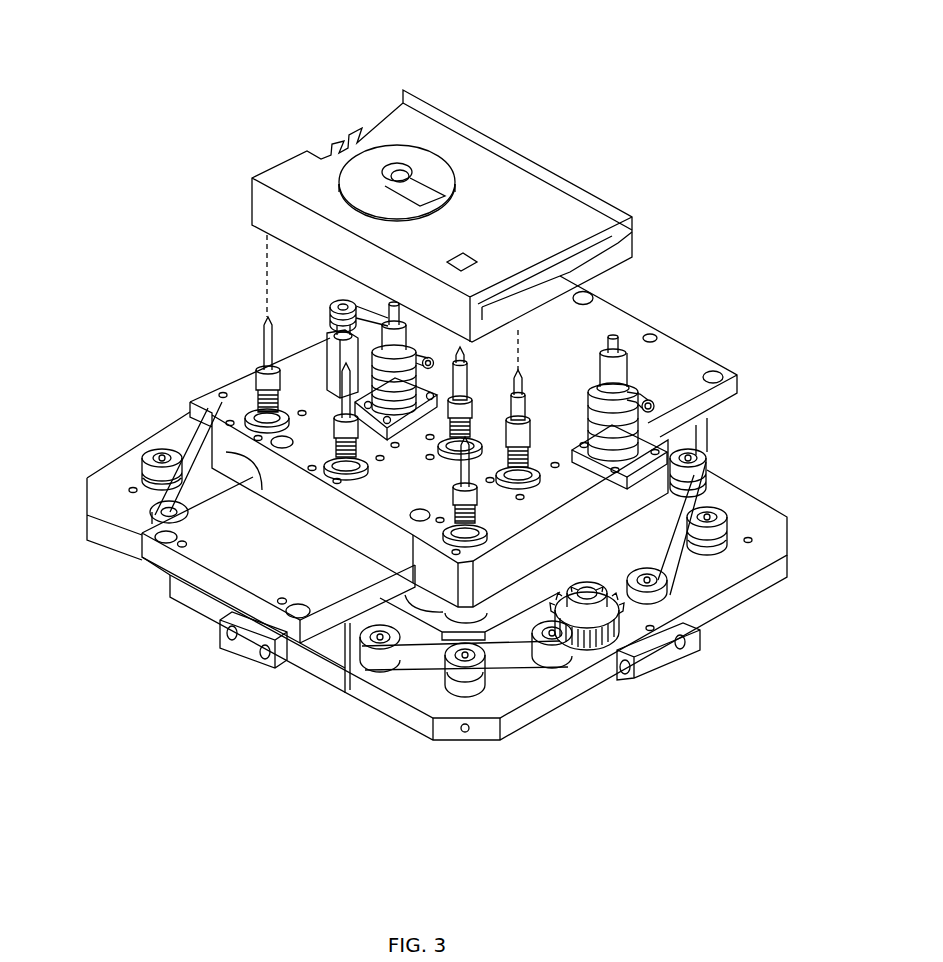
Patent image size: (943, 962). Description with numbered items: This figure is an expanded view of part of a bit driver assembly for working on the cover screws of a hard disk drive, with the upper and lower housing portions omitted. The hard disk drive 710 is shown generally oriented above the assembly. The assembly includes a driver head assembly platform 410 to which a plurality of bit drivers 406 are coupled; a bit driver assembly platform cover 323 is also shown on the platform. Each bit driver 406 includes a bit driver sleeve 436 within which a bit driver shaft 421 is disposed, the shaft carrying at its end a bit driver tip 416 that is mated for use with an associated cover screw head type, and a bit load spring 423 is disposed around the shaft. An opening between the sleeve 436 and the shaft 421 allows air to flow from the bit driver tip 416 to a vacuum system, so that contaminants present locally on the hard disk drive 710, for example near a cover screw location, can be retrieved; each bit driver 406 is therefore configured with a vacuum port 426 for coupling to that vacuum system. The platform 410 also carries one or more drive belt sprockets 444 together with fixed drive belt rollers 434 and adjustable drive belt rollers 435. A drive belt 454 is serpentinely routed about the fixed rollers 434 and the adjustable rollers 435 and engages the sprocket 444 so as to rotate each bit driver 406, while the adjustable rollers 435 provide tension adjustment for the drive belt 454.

The hard disk drive 710 is at (484, 128).
The bit driver 406 is at (702, 268).
The bit driver tip 416 is at (263, 320).
The bit driver shaft 421 is at (263, 352).
The bit load spring 423 is at (250, 392).
The vacuum port 426 is at (637, 392).
The bit driver sleeve 436 is at (645, 415).
The adjustable drive belt roller 435 is at (150, 462).
The bit driver assembly platform cover 323 is at (220, 560).
The driver head assembly platform 410 is at (435, 707).
The fixed drive belt roller 434 is at (467, 677).
The drive belt 454 is at (527, 663).
The drive belt sprocket 444 is at (602, 637).